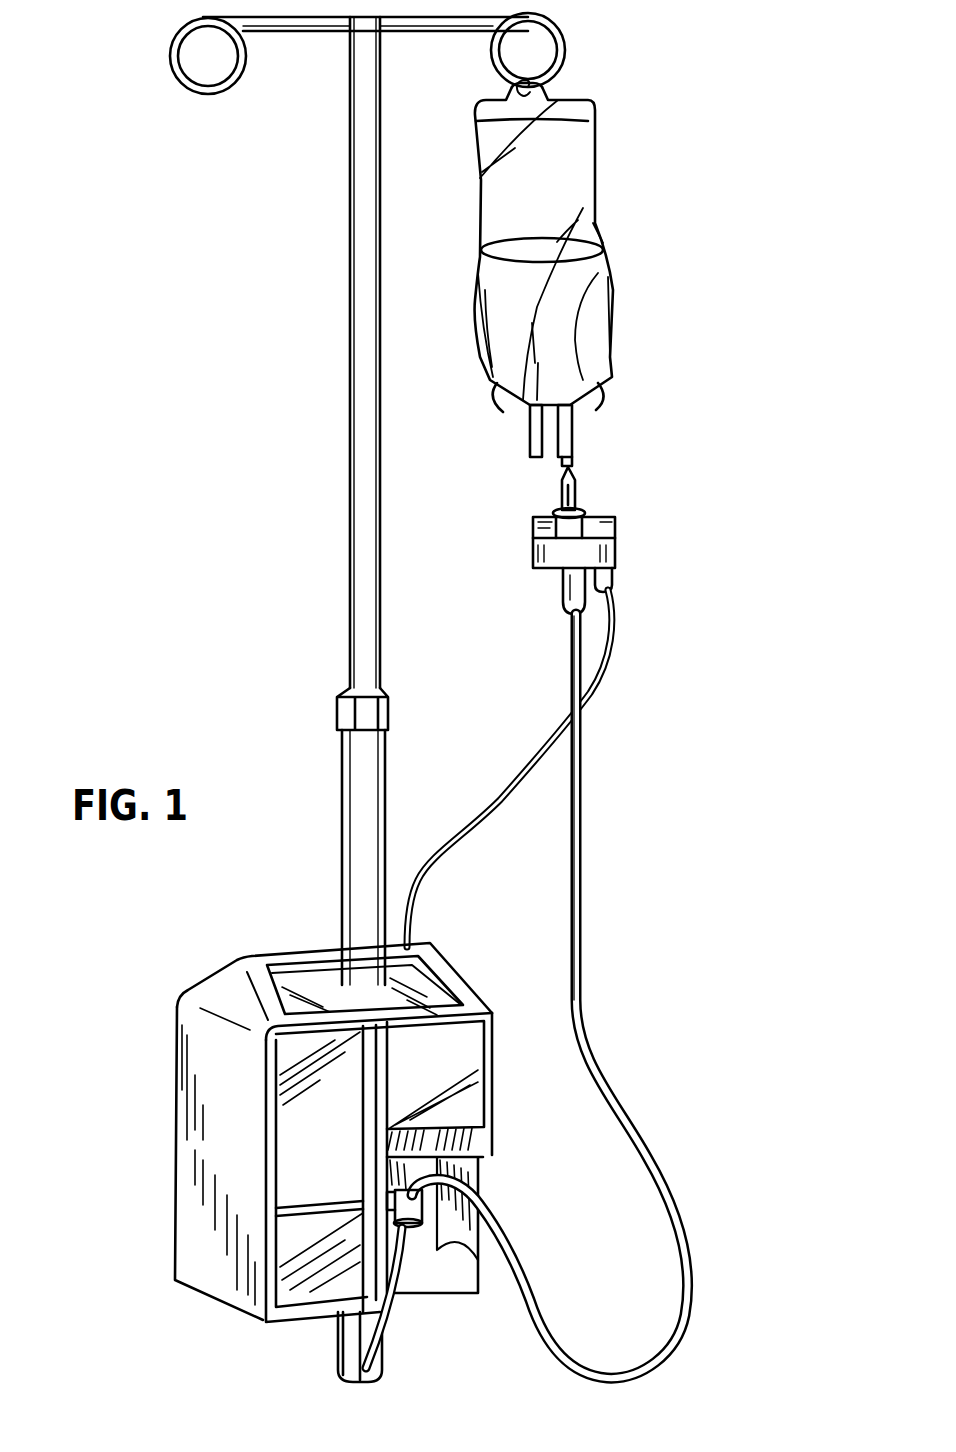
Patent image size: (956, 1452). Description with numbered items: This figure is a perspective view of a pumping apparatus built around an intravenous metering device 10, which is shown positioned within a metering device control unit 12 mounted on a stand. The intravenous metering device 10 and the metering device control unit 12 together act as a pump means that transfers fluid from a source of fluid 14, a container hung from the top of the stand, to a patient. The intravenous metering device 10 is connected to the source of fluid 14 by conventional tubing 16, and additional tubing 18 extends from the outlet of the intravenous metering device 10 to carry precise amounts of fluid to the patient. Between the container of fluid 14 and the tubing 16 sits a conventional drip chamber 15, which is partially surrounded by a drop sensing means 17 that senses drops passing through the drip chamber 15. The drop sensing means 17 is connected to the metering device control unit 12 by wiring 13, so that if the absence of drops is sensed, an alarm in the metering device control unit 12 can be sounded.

The intravenous metering device 10 is at (424, 1208).
The metering device control unit 12 is at (192, 1056).
The wiring 13 is at (525, 781).
The source of fluid 14 is at (612, 306).
The drip chamber 15 is at (564, 603).
The tubing 16 is at (582, 780).
The drop sensing means 17 is at (614, 540).
The additional tubing 18 is at (393, 1318).